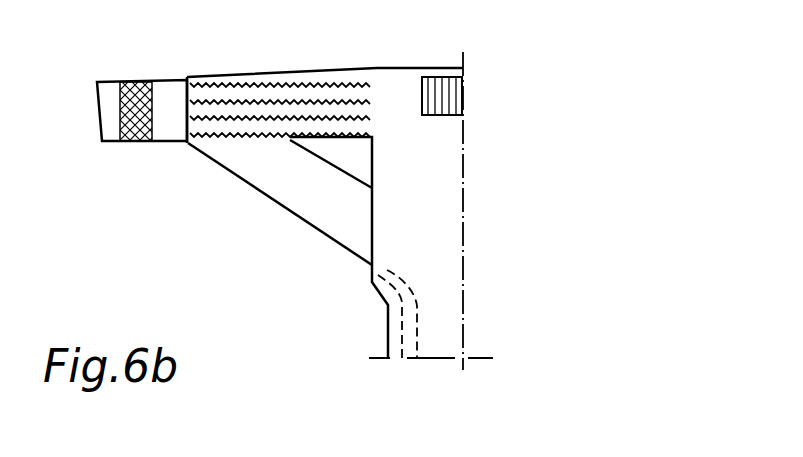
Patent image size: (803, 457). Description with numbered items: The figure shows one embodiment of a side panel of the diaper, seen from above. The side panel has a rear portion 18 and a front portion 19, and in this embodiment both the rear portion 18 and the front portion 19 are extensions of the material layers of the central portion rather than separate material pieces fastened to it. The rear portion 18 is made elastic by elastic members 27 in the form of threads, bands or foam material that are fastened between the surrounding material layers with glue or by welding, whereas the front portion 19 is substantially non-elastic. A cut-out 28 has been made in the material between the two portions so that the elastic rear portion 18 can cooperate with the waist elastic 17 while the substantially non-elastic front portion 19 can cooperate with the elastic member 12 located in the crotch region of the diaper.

The elastic member 12 is at (403, 325).
The waist elastic 17 is at (442, 93).
The rear portion 18 is at (298, 75).
The front portion 19 is at (282, 172).
The elastic members 27 is at (258, 88).
The cut-out 28 is at (345, 153).